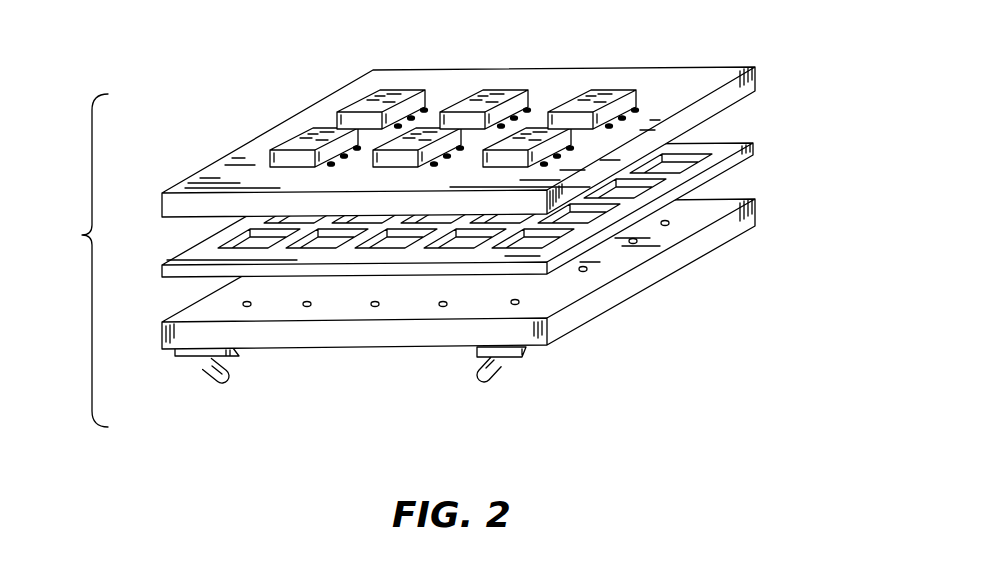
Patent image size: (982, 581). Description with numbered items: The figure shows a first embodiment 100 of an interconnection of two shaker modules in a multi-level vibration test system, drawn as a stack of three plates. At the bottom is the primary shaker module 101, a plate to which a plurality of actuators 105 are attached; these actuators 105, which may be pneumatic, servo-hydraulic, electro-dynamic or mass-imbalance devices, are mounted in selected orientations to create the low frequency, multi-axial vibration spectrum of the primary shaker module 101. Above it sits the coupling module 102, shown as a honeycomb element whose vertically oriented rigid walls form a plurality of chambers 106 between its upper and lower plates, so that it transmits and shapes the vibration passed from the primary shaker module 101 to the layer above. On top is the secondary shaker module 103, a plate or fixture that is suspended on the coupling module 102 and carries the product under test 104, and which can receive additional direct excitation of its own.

The first embodiment of an interconnection of two shaker modules 100 is at (71, 260).
The primary shaker module 101 is at (757, 201).
The coupling module 102 is at (496, 205).
The secondary shaker module 103 is at (521, 110).
The product under test 104 is at (630, 83).
The actuators 105 is at (503, 365).
The chambers 106 is at (235, 242).